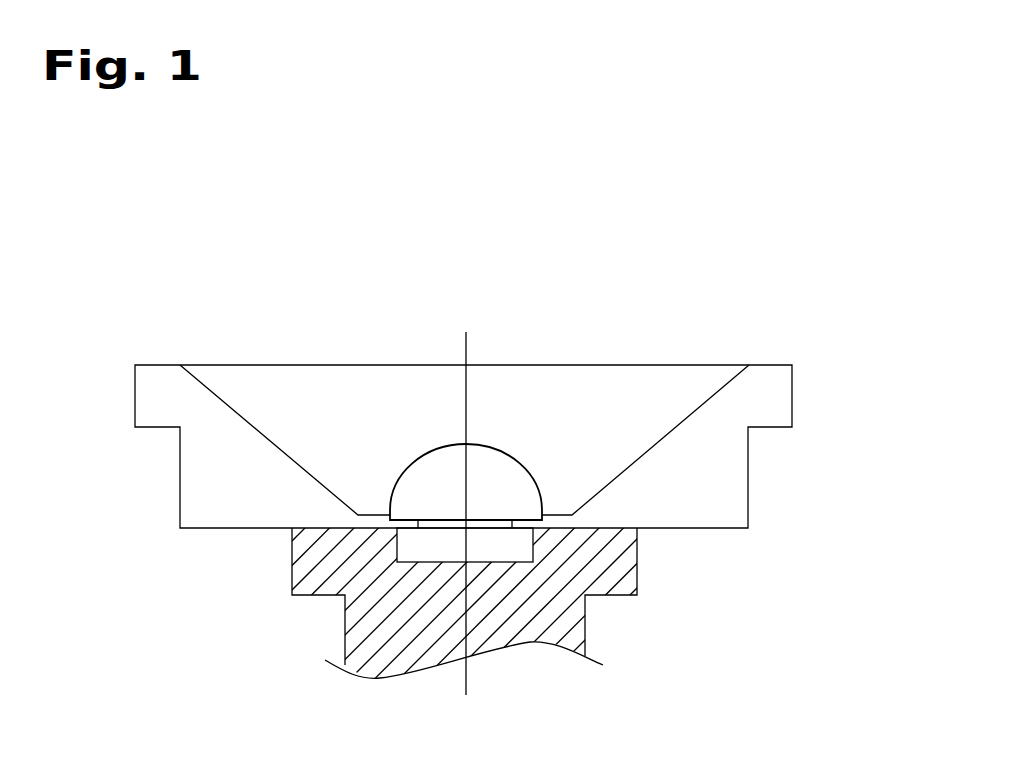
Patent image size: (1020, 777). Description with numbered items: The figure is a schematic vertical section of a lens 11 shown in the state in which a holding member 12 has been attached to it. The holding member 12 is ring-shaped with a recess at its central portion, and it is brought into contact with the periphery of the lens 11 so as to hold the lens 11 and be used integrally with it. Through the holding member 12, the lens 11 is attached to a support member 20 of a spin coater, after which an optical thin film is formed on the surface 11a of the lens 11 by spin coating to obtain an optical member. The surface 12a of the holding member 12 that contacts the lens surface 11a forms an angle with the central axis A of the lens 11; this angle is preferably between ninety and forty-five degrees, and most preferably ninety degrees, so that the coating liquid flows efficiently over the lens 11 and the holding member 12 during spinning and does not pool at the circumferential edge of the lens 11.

The lens 11 is at (503, 492).
The surface of the lens 11a is at (503, 445).
The holding member 12 is at (748, 492).
The surface of the holding member 12a is at (370, 508).
The support member 20 is at (637, 572).
The central axis A is at (467, 677).